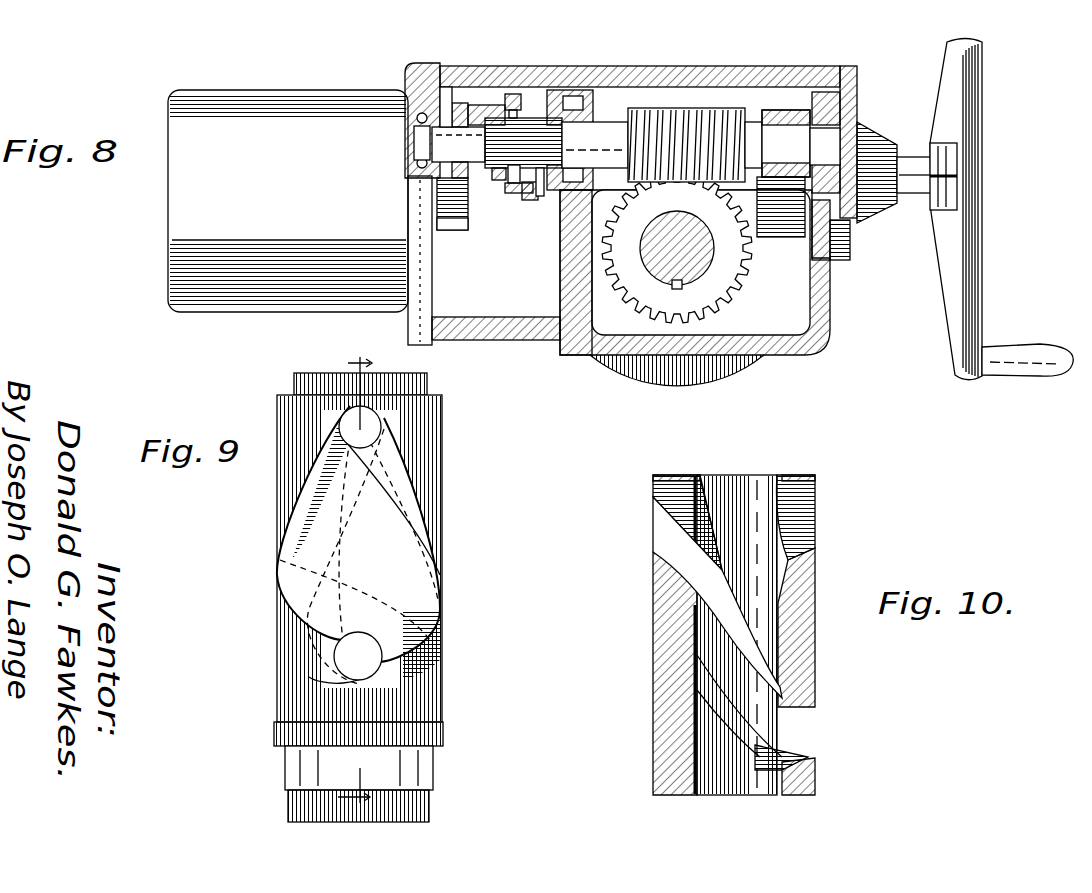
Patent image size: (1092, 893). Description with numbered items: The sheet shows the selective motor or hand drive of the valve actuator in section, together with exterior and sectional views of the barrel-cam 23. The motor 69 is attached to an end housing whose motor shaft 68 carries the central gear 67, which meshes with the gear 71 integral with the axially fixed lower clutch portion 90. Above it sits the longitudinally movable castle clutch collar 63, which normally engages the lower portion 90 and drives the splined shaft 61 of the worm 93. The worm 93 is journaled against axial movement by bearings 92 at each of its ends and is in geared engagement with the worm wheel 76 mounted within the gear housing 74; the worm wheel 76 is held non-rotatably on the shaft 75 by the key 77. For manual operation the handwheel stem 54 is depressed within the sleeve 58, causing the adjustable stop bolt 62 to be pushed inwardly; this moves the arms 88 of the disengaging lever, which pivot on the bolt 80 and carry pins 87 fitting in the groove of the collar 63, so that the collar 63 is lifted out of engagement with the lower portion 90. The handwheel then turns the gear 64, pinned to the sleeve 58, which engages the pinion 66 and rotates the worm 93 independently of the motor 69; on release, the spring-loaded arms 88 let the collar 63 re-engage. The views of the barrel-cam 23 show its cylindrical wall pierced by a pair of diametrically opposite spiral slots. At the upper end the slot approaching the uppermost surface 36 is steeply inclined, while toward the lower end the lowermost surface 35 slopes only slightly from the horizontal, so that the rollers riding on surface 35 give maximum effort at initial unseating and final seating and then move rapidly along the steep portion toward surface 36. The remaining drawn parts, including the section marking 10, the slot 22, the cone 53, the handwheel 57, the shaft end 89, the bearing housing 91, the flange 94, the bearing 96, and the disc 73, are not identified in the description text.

In FIG. 9, the section line 10 is at (355, 581).
In FIG. 9, the helical slot 22 is at (318, 478).
In FIG. 10, the helical slot 22 is at (775, 625).
In FIG. 9, the barrel-cam 23 is at (442, 475).
In FIG. 10, the barrel-cam 23 is at (814, 580).
In FIG. 9, the lowermost surface of the cam track 35 is at (442, 660).
In FIG. 10, the lowermost surface of the cam track 35 is at (800, 756).
In FIG. 9, the uppermost surface of the cam track 36 is at (378, 420).
In FIG. 10, the uppermost surface of the cam track 36 is at (818, 480).
In FIG. 8, the cone 53 is at (870, 135).
In FIG. 8, the handwheel stem 54 is at (912, 157).
In FIG. 8, the crank handle 57 is at (985, 206).
In FIG. 8, the sleeve 58 is at (590, 200).
In FIG. 8, the splined shaft 61 is at (556, 118).
In FIG. 8, the adjustable stop bolt 62 is at (540, 198).
In FIG. 8, the castle clutch collar 63 is at (498, 182).
In FIG. 8, the gear 64 is at (785, 236).
In FIG. 8, the pinion 66 is at (796, 110).
In FIG. 8, the gear 67 is at (460, 230).
In FIG. 8, the motor shaft 68 is at (437, 205).
In FIG. 8, the motor 69 is at (238, 300).
In FIG. 8, the gear 71 is at (446, 98).
In FIG. 8, the disc 73 is at (716, 372).
In FIG. 8, the gear housing 74 is at (782, 356).
In FIG. 8, the shaft 75 is at (712, 258).
In FIG. 8, the worm wheel 76 is at (728, 278).
In FIG. 8, the key 77 is at (672, 288).
In FIG. 8, the bolt 80 is at (519, 194).
In FIG. 8, the pins 87 is at (512, 185).
In FIG. 8, the arms of the disengaging lever 88 is at (515, 94).
In FIG. 8, the shaft end 89 is at (436, 140).
In FIG. 8, the lower clutch portion 90 is at (468, 115).
In FIG. 8, the bearing housing 91 is at (406, 168).
In FIG. 8, the bearings 92 is at (584, 98).
In FIG. 8, the worm 93 is at (748, 118).
In FIG. 8, the flange 94 is at (846, 68).
In FIG. 8, the bearing 96 is at (828, 105).